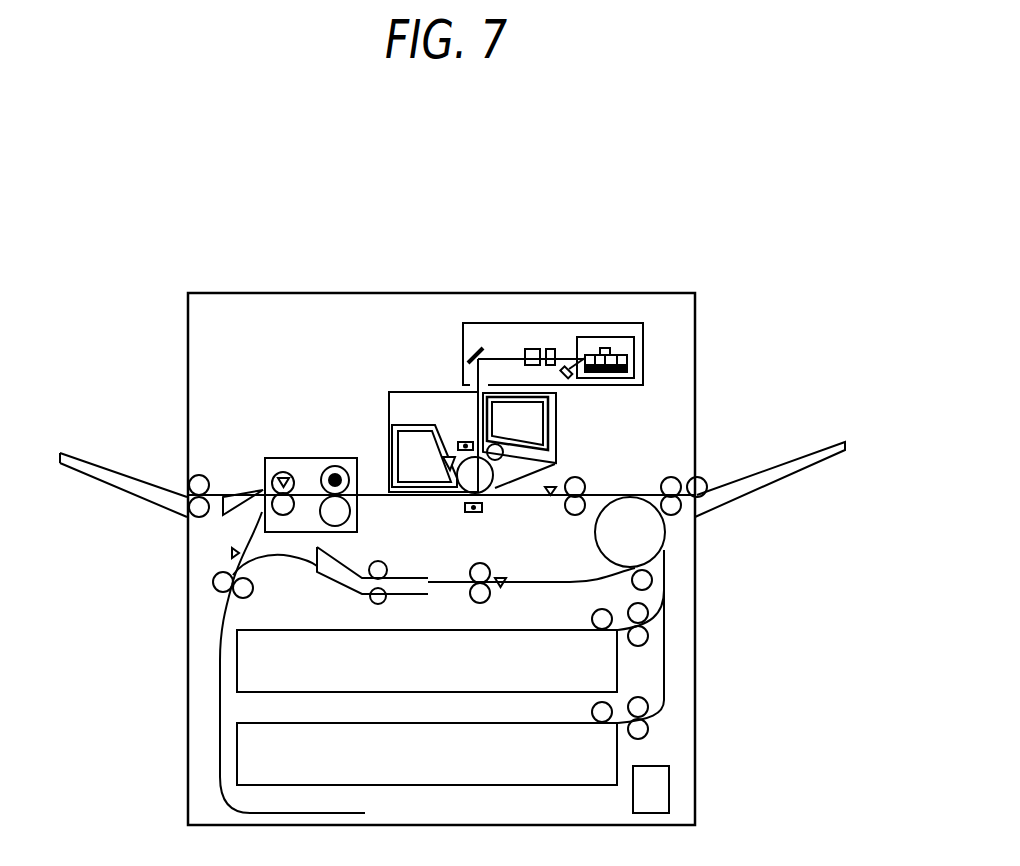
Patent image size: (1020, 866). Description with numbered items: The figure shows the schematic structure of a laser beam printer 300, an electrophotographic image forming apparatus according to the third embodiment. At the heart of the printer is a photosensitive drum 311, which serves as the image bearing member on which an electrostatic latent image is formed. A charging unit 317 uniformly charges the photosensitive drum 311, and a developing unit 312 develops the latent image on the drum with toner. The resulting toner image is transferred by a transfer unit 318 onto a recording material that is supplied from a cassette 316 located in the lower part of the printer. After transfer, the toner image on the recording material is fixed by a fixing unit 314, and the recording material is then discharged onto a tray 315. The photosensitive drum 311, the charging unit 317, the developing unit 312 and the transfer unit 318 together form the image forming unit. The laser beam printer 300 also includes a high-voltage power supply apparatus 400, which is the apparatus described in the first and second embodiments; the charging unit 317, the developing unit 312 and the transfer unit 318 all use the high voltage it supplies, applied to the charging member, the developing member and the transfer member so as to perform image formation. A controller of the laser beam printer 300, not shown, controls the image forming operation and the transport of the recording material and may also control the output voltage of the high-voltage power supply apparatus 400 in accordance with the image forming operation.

The laser beam printer 300 is at (597, 293).
The photosensitive drum 311 is at (483, 478).
The developing unit 312 is at (503, 446).
The fixing unit 314 is at (310, 458).
The tray 315 is at (112, 475).
The cassette 316 is at (602, 768).
The charging unit 317 is at (467, 442).
The transfer unit 318 is at (483, 508).
The high-voltage power supply apparatus 400 is at (669, 781).